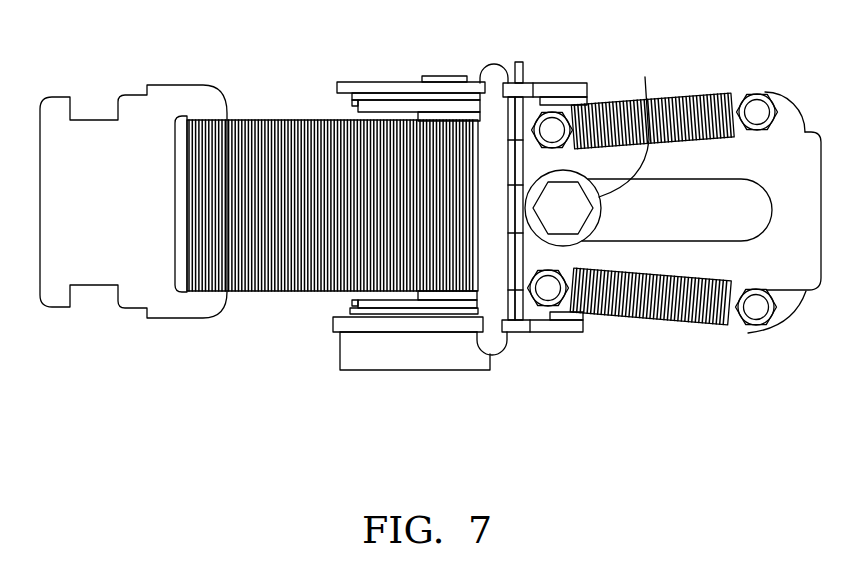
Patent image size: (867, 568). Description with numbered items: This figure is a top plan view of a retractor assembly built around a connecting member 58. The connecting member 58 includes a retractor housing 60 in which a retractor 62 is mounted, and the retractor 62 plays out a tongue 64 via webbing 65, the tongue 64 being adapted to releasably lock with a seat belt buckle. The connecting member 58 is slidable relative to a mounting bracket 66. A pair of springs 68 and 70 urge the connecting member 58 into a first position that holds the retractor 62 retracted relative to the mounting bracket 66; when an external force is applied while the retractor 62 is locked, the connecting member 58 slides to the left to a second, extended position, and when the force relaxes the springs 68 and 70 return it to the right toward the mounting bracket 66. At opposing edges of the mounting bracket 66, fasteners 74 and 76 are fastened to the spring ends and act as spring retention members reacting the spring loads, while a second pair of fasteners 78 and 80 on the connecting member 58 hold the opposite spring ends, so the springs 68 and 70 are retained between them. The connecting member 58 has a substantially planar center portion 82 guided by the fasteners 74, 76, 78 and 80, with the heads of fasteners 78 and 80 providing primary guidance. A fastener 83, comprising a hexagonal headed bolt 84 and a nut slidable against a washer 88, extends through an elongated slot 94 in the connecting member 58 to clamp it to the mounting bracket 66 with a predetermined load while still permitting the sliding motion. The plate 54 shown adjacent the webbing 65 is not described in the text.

The upper plate 54 is at (380, 82).
The connecting member 58 is at (821, 247).
The retractor housing 60 is at (533, 83).
The retractor 62 is at (407, 370).
The tongue 64 is at (44, 100).
The webbing 65 is at (287, 118).
The mounting bracket 66 is at (800, 122).
The spring 68 is at (715, 93).
The spring 70 is at (668, 322).
The fastener 74 is at (770, 92).
The fastener 76 is at (745, 332).
The fastener 78 is at (538, 83).
The fastener 80 is at (551, 310).
The center portion 82 is at (797, 178).
The fastener 83 is at (626, 120).
The hexagonal headed bolt 84 is at (568, 234).
The washer 88 is at (628, 211).
The elongated slot 94 is at (667, 178).